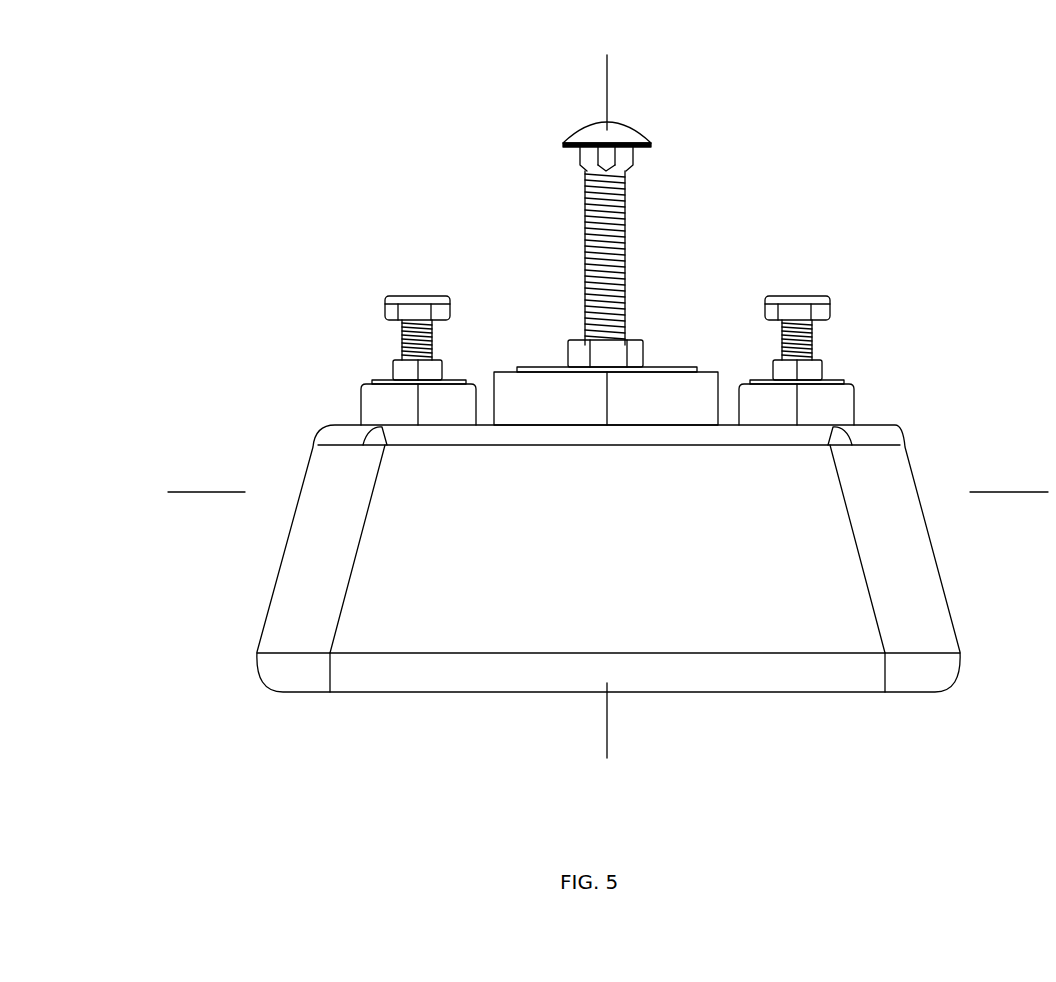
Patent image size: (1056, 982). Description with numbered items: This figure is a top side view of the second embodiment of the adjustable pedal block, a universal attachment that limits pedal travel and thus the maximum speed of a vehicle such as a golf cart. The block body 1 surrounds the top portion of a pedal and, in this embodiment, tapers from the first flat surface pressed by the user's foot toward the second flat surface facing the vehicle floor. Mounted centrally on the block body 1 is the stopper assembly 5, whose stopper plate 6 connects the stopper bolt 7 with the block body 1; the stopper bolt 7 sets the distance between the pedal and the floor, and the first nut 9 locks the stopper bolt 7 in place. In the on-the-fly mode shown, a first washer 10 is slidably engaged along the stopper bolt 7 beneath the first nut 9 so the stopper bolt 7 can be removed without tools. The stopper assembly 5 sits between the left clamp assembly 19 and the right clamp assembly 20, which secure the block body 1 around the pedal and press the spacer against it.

The block body 1 is at (242, 678).
The stopper assembly 5 is at (550, 227).
The stopper plate 6 is at (683, 65).
The stopper bolt 7 is at (178, 530).
The first nut 9 is at (634, 342).
The first washer 10 is at (540, 367).
The left clamp assembly 19 is at (849, 318).
The right clamp assembly 20 is at (362, 318).